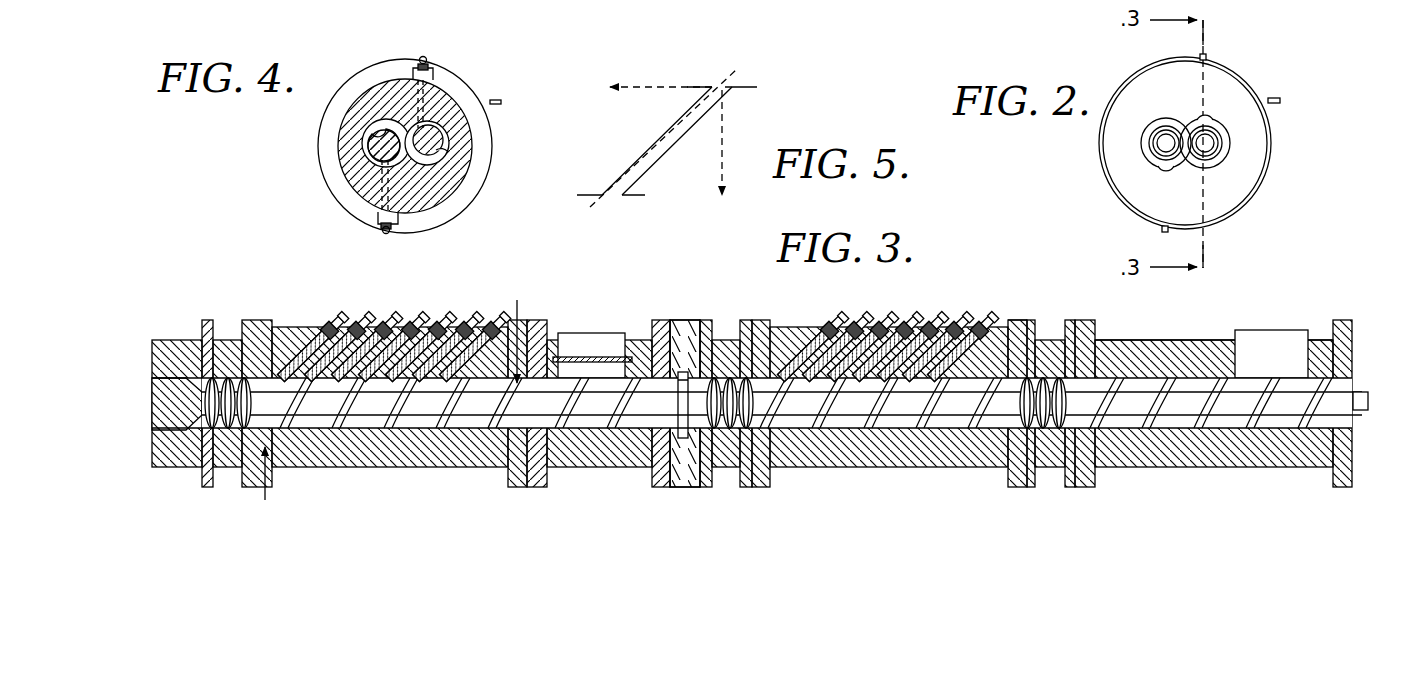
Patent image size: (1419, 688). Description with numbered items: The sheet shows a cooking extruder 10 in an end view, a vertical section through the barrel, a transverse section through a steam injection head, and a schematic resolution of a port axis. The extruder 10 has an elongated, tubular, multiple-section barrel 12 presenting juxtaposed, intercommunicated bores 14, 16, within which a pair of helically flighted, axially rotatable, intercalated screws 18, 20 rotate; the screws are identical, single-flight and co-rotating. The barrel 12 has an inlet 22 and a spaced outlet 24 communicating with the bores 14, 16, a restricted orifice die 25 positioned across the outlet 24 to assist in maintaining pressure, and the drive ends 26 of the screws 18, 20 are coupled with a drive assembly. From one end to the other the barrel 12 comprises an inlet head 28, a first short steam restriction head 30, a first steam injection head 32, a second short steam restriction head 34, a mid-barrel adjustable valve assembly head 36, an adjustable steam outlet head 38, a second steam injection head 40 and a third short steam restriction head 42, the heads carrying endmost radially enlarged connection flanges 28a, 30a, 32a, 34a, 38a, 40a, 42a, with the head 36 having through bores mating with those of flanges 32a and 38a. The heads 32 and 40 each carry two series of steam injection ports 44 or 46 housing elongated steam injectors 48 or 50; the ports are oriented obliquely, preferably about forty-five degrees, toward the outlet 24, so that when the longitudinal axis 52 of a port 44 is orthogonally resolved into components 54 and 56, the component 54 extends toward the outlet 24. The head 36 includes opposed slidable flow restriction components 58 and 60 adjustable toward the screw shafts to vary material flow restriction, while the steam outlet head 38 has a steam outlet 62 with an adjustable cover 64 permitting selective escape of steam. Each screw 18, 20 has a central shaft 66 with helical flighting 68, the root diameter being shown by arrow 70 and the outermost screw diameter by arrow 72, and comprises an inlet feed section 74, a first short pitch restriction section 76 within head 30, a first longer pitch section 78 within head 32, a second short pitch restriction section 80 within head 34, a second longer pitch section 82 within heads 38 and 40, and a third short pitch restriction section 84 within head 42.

In FIG. 2, the cooking extruder 10 is at (1268, 48).
In FIG. 3, the cooking extruder 10 is at (1330, 304).
In FIG. 3, the barrel 12 is at (1012, 316).
In FIG. 4, the bore 14 is at (372, 150).
In FIG. 2, the bore 14 is at (1167, 168).
In FIG. 4, the bore 16 is at (440, 170).
In FIG. 2, the bore 16 is at (1207, 128).
In FIG. 3, the bore 16 is at (1228, 378).
In FIG. 4, the screw 18 is at (386, 120).
In FIG. 2, the screw 18 is at (1140, 148).
In FIG. 4, the screw 20 is at (451, 143).
In FIG. 2, the screw 20 is at (1235, 134).
In FIG. 3, the screw 20 is at (1182, 424).
In FIG. 3, the inlet 22 is at (1275, 332).
In FIG. 3, the outlet 24 is at (195, 445).
In FIG. 3, the restricted orifice die 25 is at (172, 340).
In FIG. 3, the drive ends 26 is at (1363, 392).
In FIG. 2, the inlet head 28 is at (1125, 178).
In FIG. 3, the inlet head 28 is at (1297, 455).
In FIG. 3, the connection flange 28a is at (1092, 478).
In FIG. 3, the first short steam restriction head 30 is at (1046, 467).
In FIG. 3, the connection flange 30a is at (1070, 320).
In FIG. 3, the first steam injection head 32 is at (921, 467).
In FIG. 3, the connection flange 32a is at (766, 480).
In FIG. 3, the second short steam restriction head 34 is at (726, 470).
In FIG. 3, the connection flange 34a is at (746, 320).
In FIG. 3, the mid-barrel adjustable valve assembly head 36 is at (692, 330).
In FIG. 3, the adjustable steam outlet head 38 is at (606, 465).
In FIG. 3, the connection flange 38a is at (540, 470).
In FIG. 3, the second steam injection head 40 is at (440, 465).
In FIG. 3, the connection flange 40a is at (265, 320).
In FIG. 3, the third short steam restriction head 42 is at (236, 455).
In FIG. 3, the connection flange 42a is at (208, 320).
In FIG. 4, the steam injection ports 44 is at (435, 92).
In FIG. 5, the steam injection ports 44 is at (655, 166).
In FIG. 3, the steam injection ports 44 is at (803, 342).
In FIG. 3, the steam injection ports 46 is at (305, 333).
In FIG. 4, the steam injector 48 is at (426, 60).
In FIG. 2, the steam injector 48 is at (1207, 56).
In FIG. 3, the steam injector 48 is at (905, 322).
In FIG. 3, the steam injector 50 is at (411, 322).
In FIG. 5, the longitudinal axis 52 is at (737, 66).
In FIG. 5, the component 54 is at (668, 86).
In FIG. 5, the component 56 is at (727, 124).
In FIG. 3, the flow restriction component 58 is at (688, 478).
In FIG. 3, the flow restriction component 60 is at (680, 372).
In FIG. 3, the steam outlet 62 is at (568, 340).
In FIG. 4, the adjustable cover 64 is at (501, 102).
In FIG. 2, the adjustable cover 64 is at (1281, 100).
In FIG. 3, the adjustable cover 64 is at (605, 357).
In FIG. 3, the central shaft 66 is at (958, 412).
In FIG. 3, the helical flighting 68 is at (882, 412).
In FIG. 3, the arrow 70 is at (510, 302).
In FIG. 3, the arrow 72 is at (276, 492).
In FIG. 3, the inlet feed section 74 is at (1200, 412).
In FIG. 3, the first short pitch length restriction section 76 is at (1068, 390).
In FIG. 3, the first longer pitch length section 78 is at (856, 412).
In FIG. 3, the second short pitch length restriction section 80 is at (756, 390).
In FIG. 3, the second longer pitch length section 82 is at (345, 412).
In FIG. 3, the third short pitch length restriction section 84 is at (216, 428).